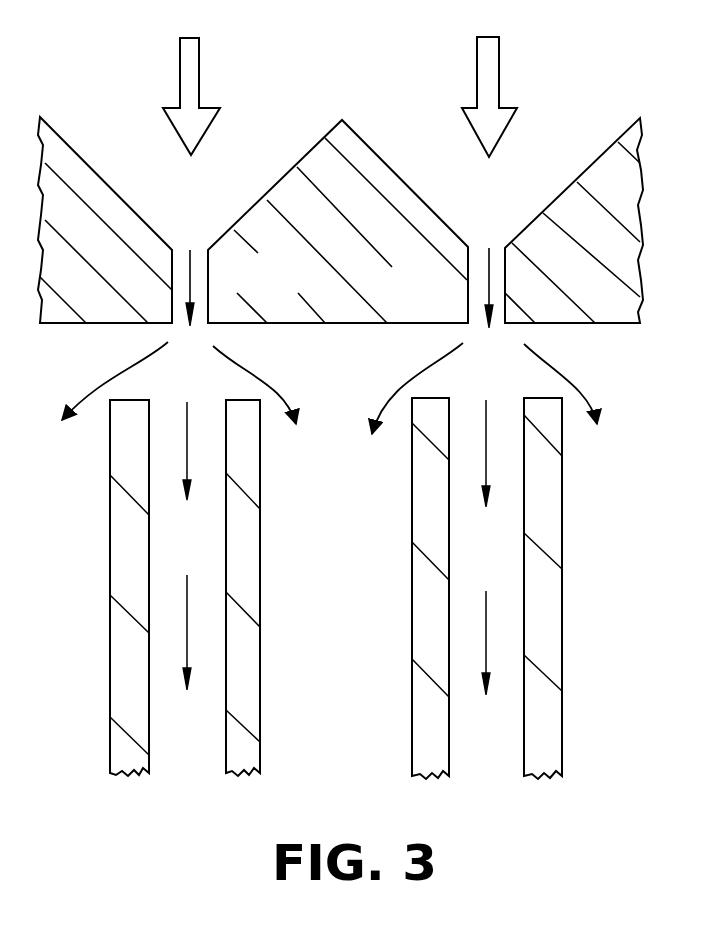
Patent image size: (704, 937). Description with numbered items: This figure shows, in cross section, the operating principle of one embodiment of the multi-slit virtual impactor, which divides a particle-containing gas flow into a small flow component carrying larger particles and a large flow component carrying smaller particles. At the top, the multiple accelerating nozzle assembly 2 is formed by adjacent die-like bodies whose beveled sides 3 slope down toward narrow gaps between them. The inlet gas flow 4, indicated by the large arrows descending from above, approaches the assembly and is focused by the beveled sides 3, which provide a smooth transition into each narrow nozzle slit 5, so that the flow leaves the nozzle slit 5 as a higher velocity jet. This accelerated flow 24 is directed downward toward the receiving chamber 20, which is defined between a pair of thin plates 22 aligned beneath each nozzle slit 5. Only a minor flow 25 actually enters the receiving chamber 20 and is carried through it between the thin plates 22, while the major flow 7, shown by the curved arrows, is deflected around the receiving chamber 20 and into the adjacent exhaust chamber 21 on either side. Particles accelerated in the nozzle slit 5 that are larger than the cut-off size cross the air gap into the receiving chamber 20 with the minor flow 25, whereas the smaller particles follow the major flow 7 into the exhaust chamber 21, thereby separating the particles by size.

The multiple accelerating nozzle assembly 2 is at (592, 94).
The beveled sides 3 is at (95, 171).
The inlet gas flow 4 is at (200, 84).
The nozzle slit 5 is at (182, 264).
The major flow 7 is at (77, 394).
The receiving chamber 20 is at (203, 559).
The exhaust chamber 21 is at (80, 708).
The thin plates 22 is at (111, 509).
The accelerated flow 24 is at (187, 287).
The minor flow 25 is at (486, 646).